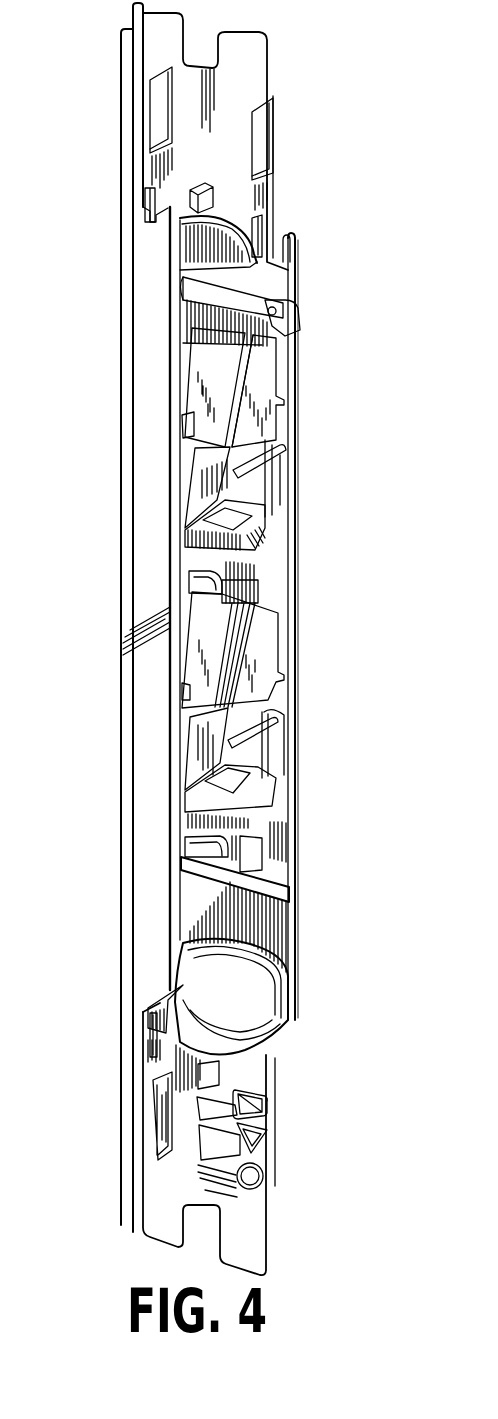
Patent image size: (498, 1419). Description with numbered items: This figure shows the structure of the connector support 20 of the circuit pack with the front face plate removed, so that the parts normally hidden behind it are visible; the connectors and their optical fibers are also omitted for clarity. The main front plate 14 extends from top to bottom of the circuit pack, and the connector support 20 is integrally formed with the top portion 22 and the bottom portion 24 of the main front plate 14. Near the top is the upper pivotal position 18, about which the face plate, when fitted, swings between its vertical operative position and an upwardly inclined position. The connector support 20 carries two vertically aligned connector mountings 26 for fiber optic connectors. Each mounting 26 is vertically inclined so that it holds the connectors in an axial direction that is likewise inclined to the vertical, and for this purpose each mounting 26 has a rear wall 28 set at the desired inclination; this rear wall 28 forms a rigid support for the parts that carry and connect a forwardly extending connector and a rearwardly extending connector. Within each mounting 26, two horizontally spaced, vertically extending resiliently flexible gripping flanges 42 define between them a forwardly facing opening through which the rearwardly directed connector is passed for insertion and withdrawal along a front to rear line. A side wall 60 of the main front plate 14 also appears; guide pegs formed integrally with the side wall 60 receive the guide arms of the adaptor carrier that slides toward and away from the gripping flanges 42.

The main front plate 14 is at (271, 221).
The top portion of the main front plate 22 is at (190, 130).
The bottom portion of the main front plate 24 is at (167, 1175).
The side wall of the main front plate 60 is at (152, 582).
The upper pivotal position 18 is at (299, 320).
The rear wall 28 is at (262, 371).
The connector mounting 26 is at (286, 420).
The connector support 20 is at (271, 549).
The resiliently flexible gripping flanges 42 is at (198, 740).